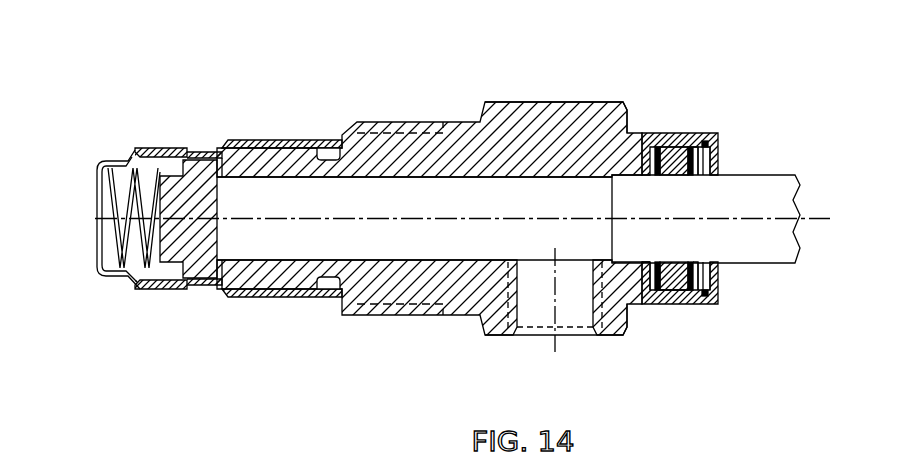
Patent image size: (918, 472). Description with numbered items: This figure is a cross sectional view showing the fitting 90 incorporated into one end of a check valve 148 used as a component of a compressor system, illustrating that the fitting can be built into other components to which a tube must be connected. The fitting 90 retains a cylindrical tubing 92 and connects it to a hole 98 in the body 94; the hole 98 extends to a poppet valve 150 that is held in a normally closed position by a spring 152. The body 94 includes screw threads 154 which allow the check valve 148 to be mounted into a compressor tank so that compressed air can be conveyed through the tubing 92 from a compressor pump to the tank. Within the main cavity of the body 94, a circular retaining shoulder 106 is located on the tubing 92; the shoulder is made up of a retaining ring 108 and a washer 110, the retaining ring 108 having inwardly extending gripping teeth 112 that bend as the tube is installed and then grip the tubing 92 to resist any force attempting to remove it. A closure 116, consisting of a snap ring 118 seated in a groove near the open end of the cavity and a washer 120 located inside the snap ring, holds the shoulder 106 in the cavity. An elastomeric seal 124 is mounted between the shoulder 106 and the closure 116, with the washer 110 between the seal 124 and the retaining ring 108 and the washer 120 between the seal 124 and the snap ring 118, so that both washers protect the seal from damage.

The fitting 90 is at (722, 419).
The tubing 92 is at (750, 172).
The body 94 is at (552, 100).
The hole 98 is at (350, 192).
The retaining shoulder 106 is at (661, 150).
The retaining ring 108 is at (656, 290).
The washer 110 is at (659, 287).
The gripping teeth 112 is at (650, 148).
The closure 116 is at (703, 145).
The snap ring 118 is at (710, 304).
The washer 120 is at (705, 268).
The elastomeric seal 124 is at (673, 290).
The check valve 148 is at (366, 338).
The poppet valve 150 is at (200, 178).
The spring 152 is at (132, 155).
The screw threads 154 is at (398, 120).